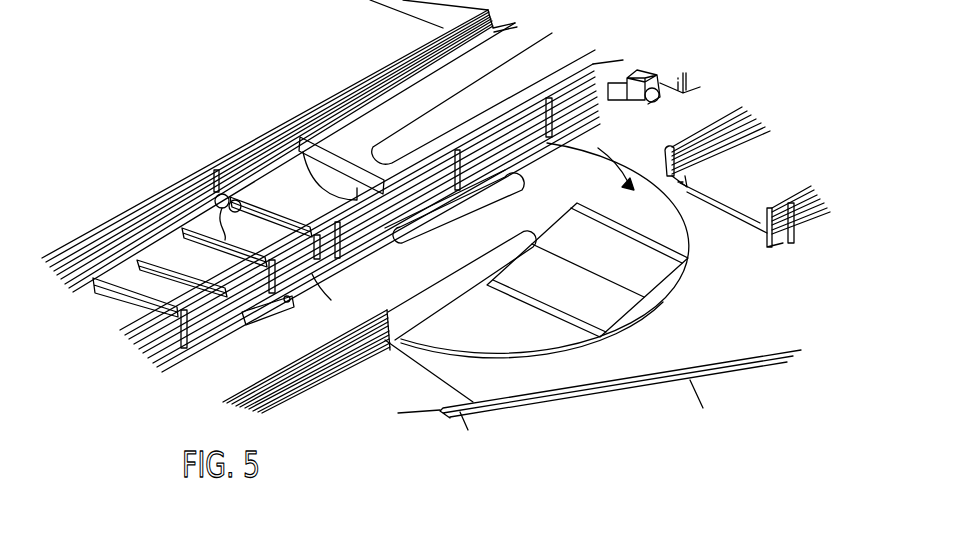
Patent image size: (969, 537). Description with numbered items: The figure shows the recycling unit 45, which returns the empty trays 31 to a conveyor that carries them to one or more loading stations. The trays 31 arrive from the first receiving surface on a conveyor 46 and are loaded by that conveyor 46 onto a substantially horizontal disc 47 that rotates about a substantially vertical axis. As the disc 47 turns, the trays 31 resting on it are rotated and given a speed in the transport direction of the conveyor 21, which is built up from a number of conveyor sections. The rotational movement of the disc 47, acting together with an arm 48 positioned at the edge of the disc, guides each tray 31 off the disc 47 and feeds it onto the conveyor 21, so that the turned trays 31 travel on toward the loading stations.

The conveyor 21 is at (398, 413).
The empty trays 31 is at (522, 186).
The recycling unit 45 is at (526, 366).
The conveyor 46 is at (262, 314).
The disc 47 is at (385, 288).
The arm 48 is at (443, 302).